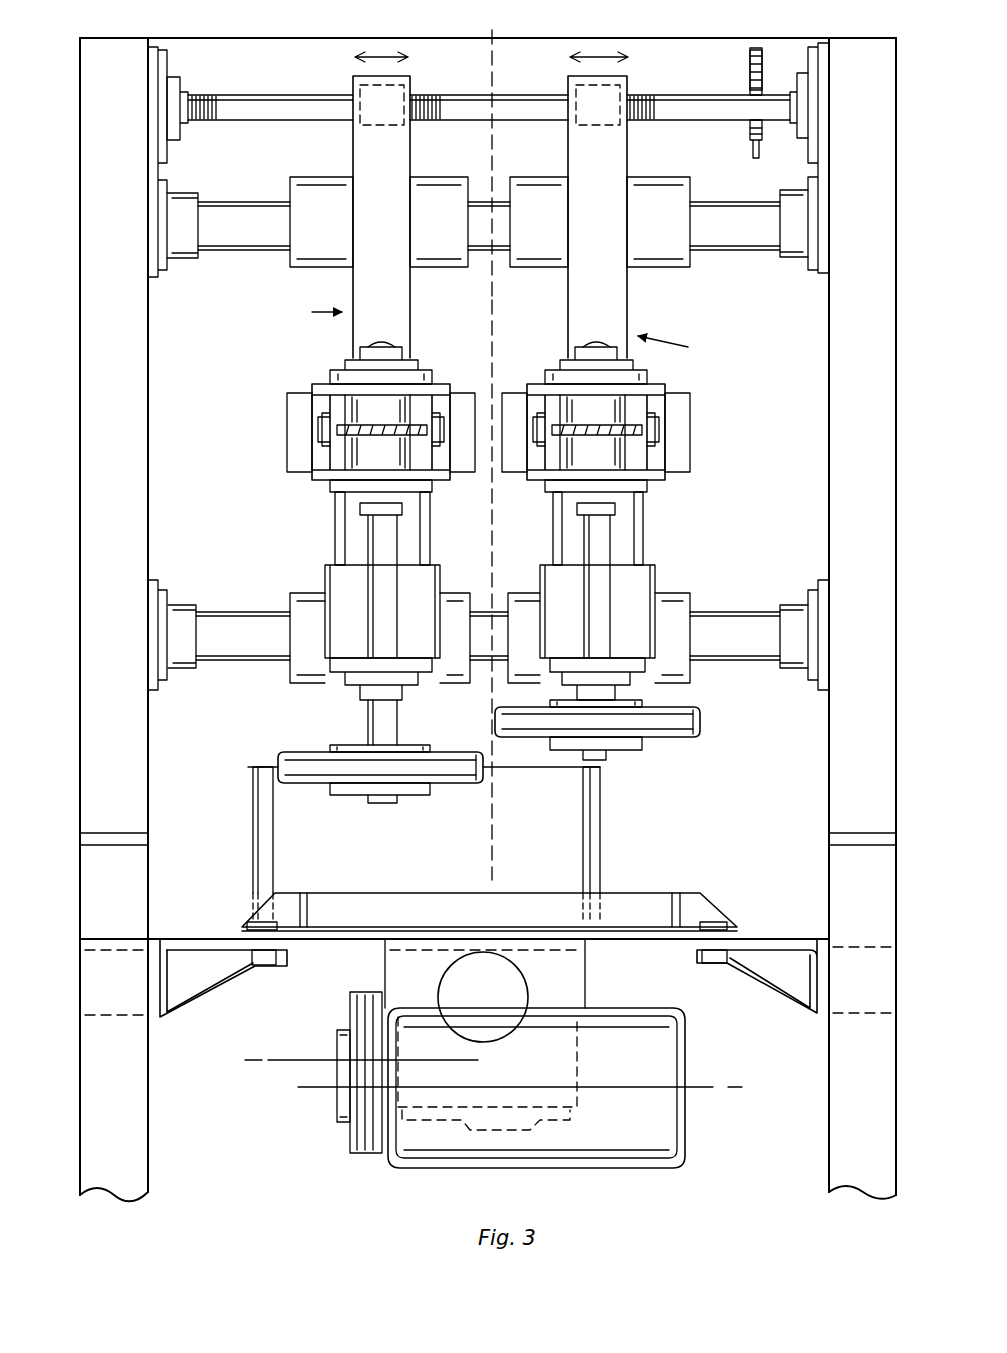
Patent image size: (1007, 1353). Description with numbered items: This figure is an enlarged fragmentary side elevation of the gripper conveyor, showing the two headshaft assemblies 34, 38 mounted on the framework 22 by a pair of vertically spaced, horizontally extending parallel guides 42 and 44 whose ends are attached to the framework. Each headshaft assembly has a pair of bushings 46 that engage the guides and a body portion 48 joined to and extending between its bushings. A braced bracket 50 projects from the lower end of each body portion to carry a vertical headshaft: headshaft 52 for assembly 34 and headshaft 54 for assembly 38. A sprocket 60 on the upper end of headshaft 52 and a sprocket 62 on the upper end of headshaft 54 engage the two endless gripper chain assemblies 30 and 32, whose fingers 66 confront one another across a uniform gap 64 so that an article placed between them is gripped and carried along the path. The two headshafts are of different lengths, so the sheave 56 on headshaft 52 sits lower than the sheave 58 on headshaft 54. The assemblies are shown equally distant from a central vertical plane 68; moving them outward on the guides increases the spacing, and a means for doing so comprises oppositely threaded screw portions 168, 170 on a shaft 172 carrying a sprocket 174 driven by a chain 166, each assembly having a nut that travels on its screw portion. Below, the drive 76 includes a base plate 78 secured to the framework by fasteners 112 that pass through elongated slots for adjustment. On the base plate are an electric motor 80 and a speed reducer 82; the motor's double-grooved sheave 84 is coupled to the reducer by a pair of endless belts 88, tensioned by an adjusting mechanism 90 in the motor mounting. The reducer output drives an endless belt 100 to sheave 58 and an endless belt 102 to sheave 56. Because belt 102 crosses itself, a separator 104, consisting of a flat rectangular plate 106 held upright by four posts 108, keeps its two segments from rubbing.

The framework 22 is at (826, 820).
The gripper chain assembly 30 is at (315, 385).
The gripper chain assembly 32 is at (666, 388).
The headshaft assembly 34 is at (311, 313).
The headshaft assembly 38 is at (677, 349).
The guide 42 is at (737, 227).
The guide 44 is at (737, 625).
The bushings 46 is at (309, 192).
The body portion 48 is at (392, 306).
The braced bracket 50 is at (327, 567).
The headshaft 52 is at (377, 541).
The headshaft 54 is at (595, 543).
The sheave 56 is at (297, 784).
The sheave 58 is at (684, 737).
The sprocket 60 is at (337, 429).
The sprocket 62 is at (662, 428).
The gap 64 is at (495, 400).
The fingers 66 is at (467, 476).
The central vertical plane 68 is at (494, 148).
The drive 76 is at (501, 1075).
The base plate 78 is at (703, 893).
The electric motor 80 is at (688, 1043).
The speed reducer 82 is at (580, 1067).
The double-grooved sheave 84 is at (350, 1143).
The endless belts 88 is at (361, 1153).
The adjusting mechanism 90 is at (527, 985).
The endless belt 100 is at (651, 720).
The endless belt 102 is at (455, 762).
The separator 104 is at (250, 767).
The flat rectangular plate 106 is at (522, 770).
The posts 108 is at (263, 838).
The fasteners 112 is at (255, 918).
The chain 166 is at (758, 53).
The screw portion 168 is at (422, 121).
The screw portion 170 is at (645, 121).
The shaft 172 is at (704, 108).
The sprocket 174 is at (748, 58).